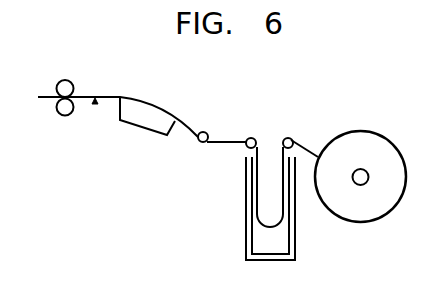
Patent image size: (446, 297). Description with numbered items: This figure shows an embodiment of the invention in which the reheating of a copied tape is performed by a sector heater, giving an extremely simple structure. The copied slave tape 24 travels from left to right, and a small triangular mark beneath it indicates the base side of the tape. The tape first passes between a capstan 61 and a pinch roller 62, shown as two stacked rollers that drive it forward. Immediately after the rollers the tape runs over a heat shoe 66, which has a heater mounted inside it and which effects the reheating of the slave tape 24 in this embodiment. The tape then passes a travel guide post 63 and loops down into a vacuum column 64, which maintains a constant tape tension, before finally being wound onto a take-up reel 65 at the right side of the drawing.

The copied slave tape 24 is at (44, 95).
The capstan 61 is at (66, 116).
The pinch roller 62 is at (72, 84).
The travel guide post 63 is at (205, 131).
The vacuum column 64 is at (277, 250).
The take-up reel 65 is at (363, 221).
The heat shoe 66 is at (150, 124).